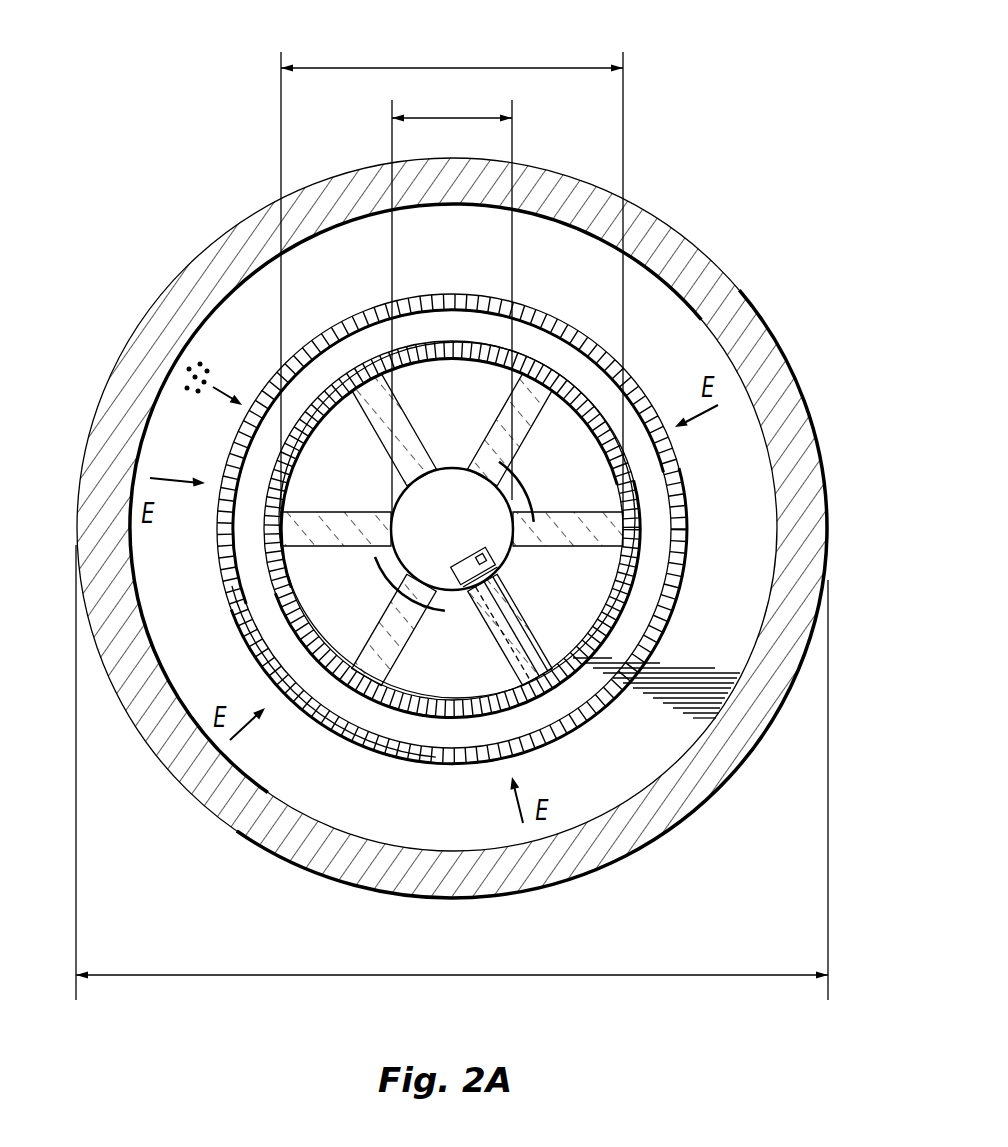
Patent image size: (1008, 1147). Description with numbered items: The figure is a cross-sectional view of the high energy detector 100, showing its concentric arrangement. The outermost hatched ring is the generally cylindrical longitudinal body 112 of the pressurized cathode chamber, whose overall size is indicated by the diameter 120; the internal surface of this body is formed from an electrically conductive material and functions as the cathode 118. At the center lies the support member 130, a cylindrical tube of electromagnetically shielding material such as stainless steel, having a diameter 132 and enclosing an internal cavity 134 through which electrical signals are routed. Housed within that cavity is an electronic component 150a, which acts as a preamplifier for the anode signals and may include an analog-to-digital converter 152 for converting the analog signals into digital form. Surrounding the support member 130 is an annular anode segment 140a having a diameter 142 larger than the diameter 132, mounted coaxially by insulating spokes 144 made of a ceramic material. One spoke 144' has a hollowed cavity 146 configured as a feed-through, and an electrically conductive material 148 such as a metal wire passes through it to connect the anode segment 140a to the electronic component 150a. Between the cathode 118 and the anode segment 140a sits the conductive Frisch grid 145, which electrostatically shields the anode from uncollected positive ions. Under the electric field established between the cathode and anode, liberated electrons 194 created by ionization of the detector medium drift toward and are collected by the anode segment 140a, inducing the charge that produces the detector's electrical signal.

The high energy detector 100 is at (150, 215).
The longitudinal body 112 is at (770, 497).
The cathode 118 is at (772, 556).
The diameter 120 is at (450, 978).
The support member 130 is at (377, 503).
The diameter 132 is at (452, 117).
The internal cavity 134 is at (452, 498).
The anode segment 140a is at (322, 680).
The diameter 142 is at (455, 66).
The spokes 144 is at (452, 529).
The spoke 144' is at (486, 629).
The Frisch grid 145 is at (397, 755).
The hollowed cavity 146 is at (515, 640).
The electrically conductive material 148 is at (490, 633).
The electronic component 150a is at (460, 565).
The analog-to-digital converter 152 is at (479, 548).
The liberated electrons 194 is at (213, 372).